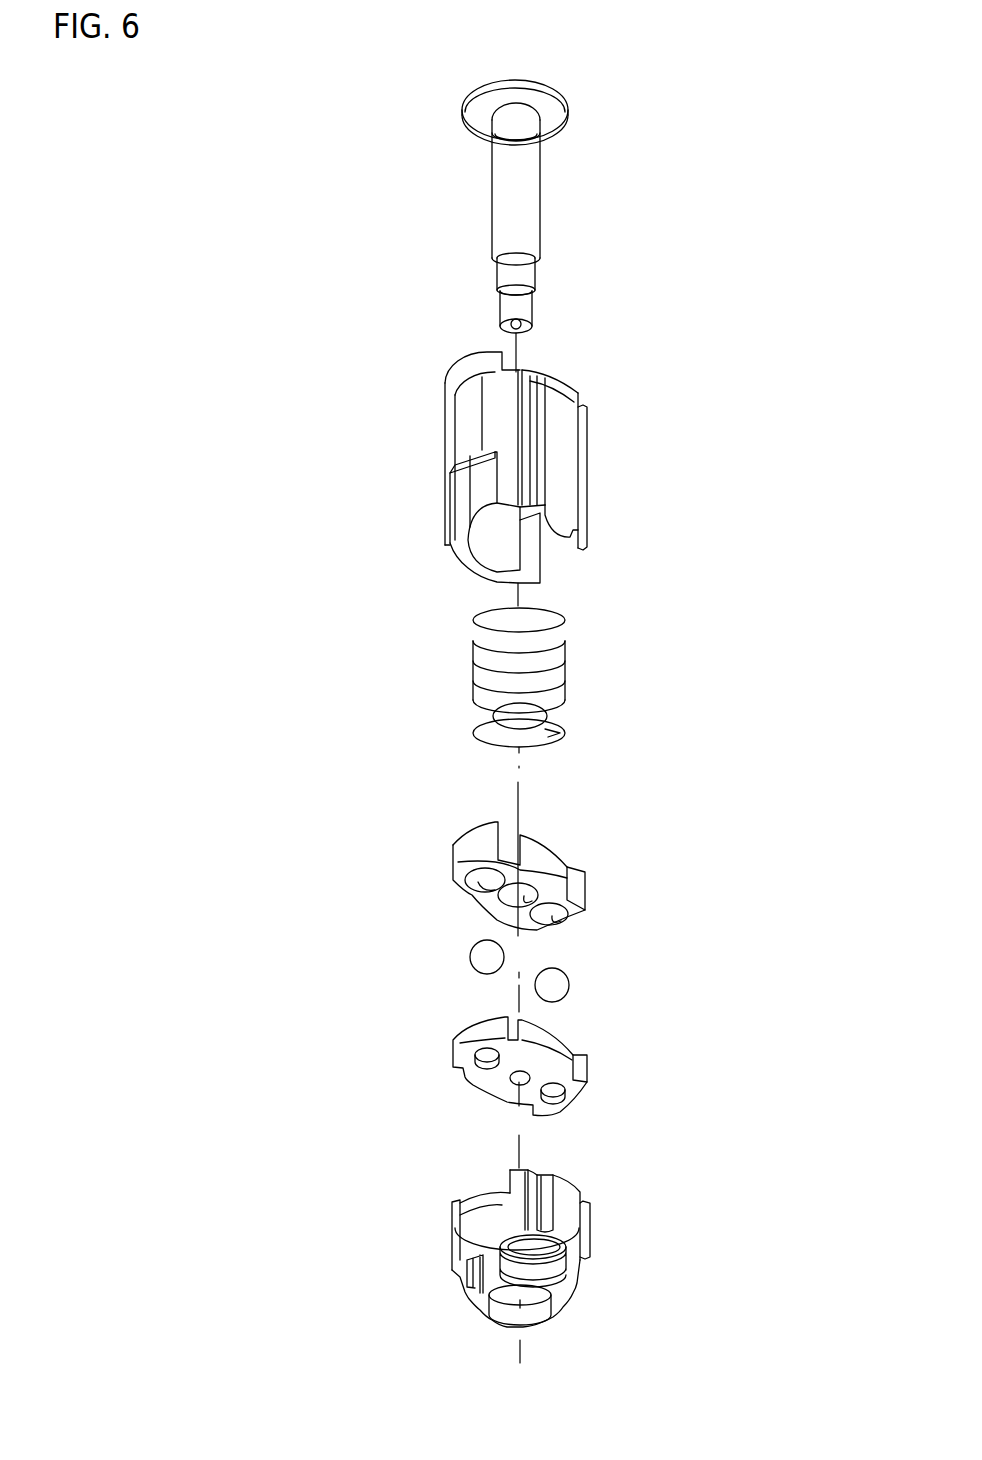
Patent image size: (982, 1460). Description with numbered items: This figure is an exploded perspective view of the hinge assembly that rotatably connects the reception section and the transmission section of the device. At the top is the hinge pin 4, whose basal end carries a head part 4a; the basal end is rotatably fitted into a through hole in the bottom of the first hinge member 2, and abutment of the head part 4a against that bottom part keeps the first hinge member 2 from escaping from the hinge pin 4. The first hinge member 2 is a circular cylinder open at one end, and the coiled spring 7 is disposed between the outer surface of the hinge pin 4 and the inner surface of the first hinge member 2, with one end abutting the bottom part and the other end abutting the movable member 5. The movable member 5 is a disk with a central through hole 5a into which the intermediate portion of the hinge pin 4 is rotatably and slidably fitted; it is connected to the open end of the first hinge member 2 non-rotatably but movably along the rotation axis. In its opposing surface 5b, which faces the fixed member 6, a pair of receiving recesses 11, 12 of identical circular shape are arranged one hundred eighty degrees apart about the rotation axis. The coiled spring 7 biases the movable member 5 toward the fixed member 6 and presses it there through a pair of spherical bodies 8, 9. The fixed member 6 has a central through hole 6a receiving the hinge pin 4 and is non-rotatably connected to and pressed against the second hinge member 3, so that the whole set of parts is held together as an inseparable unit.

The hinge pin 4 is at (566, 173).
The head part 4a is at (543, 82).
The first hinge member 2 is at (585, 438).
The coiled spring 7 is at (473, 663).
The movable member 5 is at (502, 869).
The through hole 5a is at (570, 890).
The opposing surface 5b is at (477, 927).
The receiving recess 11 is at (470, 893).
The receiving recess 12 is at (560, 928).
The spherical body 8 is at (469, 960).
The spherical body 9 is at (570, 988).
The fixed member 6 is at (456, 1077).
The through hole 6a is at (477, 1103).
The second hinge member 3 is at (590, 1245).